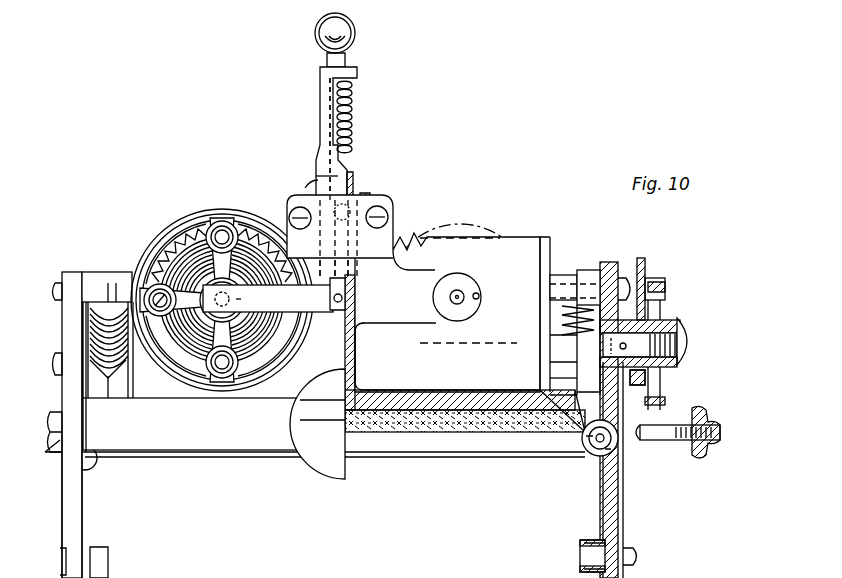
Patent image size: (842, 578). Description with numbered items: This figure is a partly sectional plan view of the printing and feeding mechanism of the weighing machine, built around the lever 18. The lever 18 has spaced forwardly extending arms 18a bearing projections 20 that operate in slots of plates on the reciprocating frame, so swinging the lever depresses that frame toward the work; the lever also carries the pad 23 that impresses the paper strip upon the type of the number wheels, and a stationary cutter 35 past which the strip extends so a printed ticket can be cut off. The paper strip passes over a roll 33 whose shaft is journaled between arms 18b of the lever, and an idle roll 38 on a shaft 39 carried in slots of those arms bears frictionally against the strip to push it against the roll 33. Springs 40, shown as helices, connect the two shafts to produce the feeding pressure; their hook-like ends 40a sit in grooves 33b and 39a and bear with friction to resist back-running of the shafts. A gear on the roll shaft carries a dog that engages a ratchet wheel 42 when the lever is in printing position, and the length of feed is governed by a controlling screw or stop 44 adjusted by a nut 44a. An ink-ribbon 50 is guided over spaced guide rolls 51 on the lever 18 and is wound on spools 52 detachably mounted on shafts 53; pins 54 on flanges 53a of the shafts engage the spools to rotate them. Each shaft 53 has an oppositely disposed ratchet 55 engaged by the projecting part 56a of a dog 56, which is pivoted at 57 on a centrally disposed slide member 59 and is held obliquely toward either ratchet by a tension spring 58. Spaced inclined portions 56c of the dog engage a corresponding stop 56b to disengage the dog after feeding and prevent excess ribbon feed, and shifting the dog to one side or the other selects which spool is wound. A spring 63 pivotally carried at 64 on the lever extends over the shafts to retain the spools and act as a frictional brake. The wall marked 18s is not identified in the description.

The lever 18 is at (219, 362).
The forwardly extending arms 18a is at (84, 516).
The arms of lever 18b is at (72, 275).
The bracket wall 18s is at (389, 334).
The projections 20 is at (110, 560).
The pad 23 is at (472, 452).
The roll 33 is at (710, 320).
The groove 33b is at (565, 379).
The stationary cutter 35 is at (447, 356).
The idle roll 38 is at (545, 243).
The shaft 39 is at (89, 272).
The groove 39a is at (577, 272).
The springs 40 is at (88, 333).
The hook-like ends 40a is at (114, 282).
The ratchet wheel 42 is at (652, 318).
The controlling screw or stop 44 is at (660, 443).
The nut 44a is at (708, 412).
The ink-ribbon 50 is at (210, 452).
The guide rolls 51 is at (96, 462).
The spools 52 is at (332, 283).
The shafts 53 is at (225, 320).
The flanges 53a is at (458, 282).
The pins 54 is at (480, 296).
The ratchet 55 is at (196, 232).
The dog 56 is at (320, 88).
The projecting part 56a is at (366, 300).
The stop 56b is at (304, 190).
The inclined portions 56c is at (250, 118).
The pivot 57 is at (358, 196).
The tension spring 58 is at (355, 126).
The slide member 59 is at (316, 175).
The spring 63 is at (250, 299).
The pivot 64 is at (306, 338).